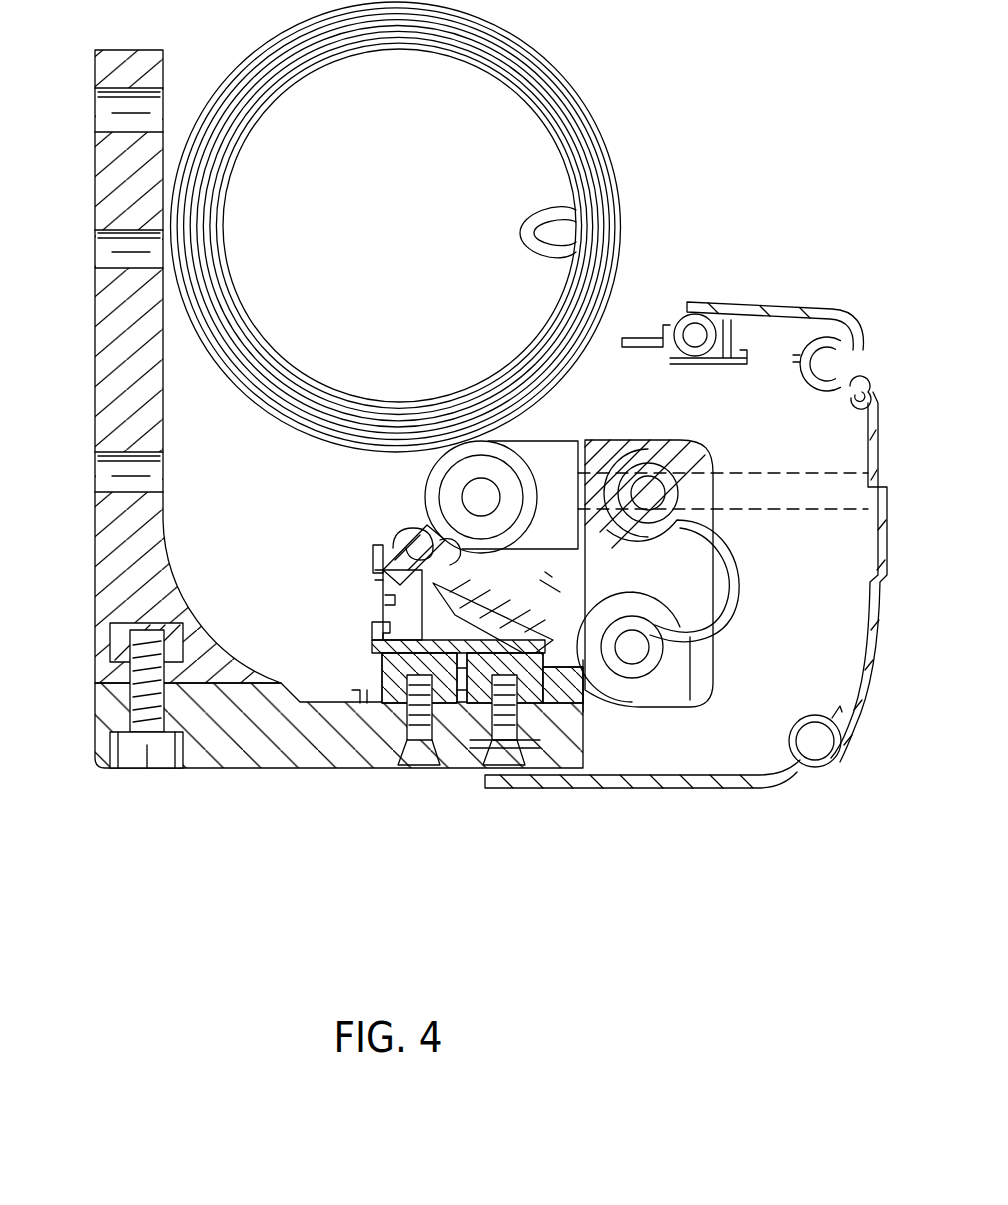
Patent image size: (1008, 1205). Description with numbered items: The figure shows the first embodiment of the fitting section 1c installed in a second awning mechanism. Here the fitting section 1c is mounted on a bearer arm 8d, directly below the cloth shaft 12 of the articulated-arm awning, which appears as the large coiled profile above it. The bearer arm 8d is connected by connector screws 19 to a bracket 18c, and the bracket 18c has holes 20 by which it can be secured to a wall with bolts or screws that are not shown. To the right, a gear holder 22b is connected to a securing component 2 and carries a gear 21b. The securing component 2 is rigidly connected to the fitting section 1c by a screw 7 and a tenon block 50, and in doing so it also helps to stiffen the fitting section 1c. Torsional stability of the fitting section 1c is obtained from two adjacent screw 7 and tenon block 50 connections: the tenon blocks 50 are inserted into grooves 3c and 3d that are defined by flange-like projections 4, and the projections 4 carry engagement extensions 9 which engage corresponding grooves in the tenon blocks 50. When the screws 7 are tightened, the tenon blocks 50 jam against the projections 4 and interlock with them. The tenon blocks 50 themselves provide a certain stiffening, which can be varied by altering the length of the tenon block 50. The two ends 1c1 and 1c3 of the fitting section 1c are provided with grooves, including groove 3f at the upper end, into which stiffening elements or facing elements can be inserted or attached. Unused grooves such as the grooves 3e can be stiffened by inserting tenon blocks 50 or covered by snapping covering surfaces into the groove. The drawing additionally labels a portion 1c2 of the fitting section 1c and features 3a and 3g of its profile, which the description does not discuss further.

The securing component 2 is at (603, 710).
The projections 4 is at (380, 580).
The screw 7 is at (540, 585).
The bearer arm 8d is at (230, 748).
The engagement extensions 9 is at (385, 600).
The cloth shaft 12 is at (379, 226).
The bracket 18c is at (108, 383).
The connector screws 19 is at (128, 700).
The holes 20 is at (110, 112).
The gear 21b is at (507, 470).
The gear holder 22b is at (447, 530).
The tenon block 50 is at (378, 660).
The fitting section 1c is at (358, 547).
The end of the fitting section 1c1 is at (583, 740).
The bracket second portion 1c2 is at (470, 705).
The end of the fitting section 1c3 is at (412, 528).
The clamp plate portion 3a is at (472, 740).
The groove 3c is at (465, 705).
The groove 3d is at (395, 700).
The grooves 3e is at (385, 600).
The groove 3f is at (402, 540).
The clamp plate portion 3g is at (360, 692).